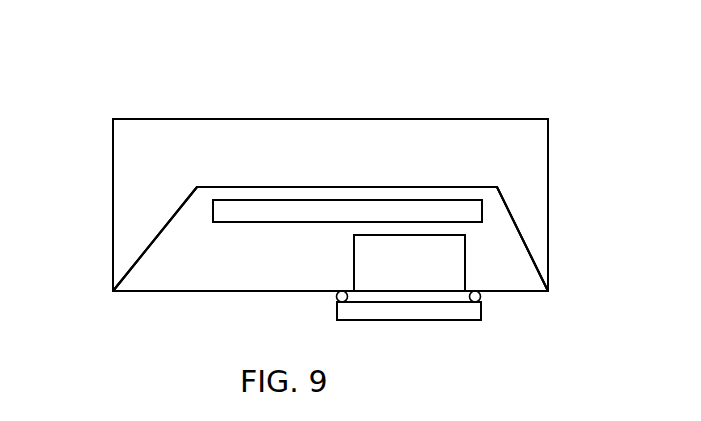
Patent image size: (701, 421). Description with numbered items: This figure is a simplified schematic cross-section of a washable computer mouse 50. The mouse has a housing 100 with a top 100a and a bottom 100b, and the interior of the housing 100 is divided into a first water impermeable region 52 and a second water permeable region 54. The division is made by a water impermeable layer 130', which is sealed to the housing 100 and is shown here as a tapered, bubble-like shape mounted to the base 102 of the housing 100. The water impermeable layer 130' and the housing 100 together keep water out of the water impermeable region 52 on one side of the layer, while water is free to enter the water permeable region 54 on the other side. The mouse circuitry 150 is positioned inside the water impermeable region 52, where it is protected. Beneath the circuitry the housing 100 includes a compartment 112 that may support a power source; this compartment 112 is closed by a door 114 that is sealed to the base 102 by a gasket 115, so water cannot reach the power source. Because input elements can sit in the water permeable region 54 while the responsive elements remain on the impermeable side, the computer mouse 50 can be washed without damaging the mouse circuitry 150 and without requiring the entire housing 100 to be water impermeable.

The computer mouse 50 is at (494, 87).
The housing 100 is at (113, 258).
The top 100a is at (183, 105).
The bottom 100b is at (234, 308).
The base 102 is at (145, 291).
The water permeable region 54 is at (140, 170).
The water impermeable region 52 is at (216, 270).
The mouse circuitry 150 is at (313, 200).
The compartment 112 is at (354, 262).
The door 114 is at (458, 320).
The gasket 115 is at (481, 298).
The water impermeable layer 130' is at (575, 239).